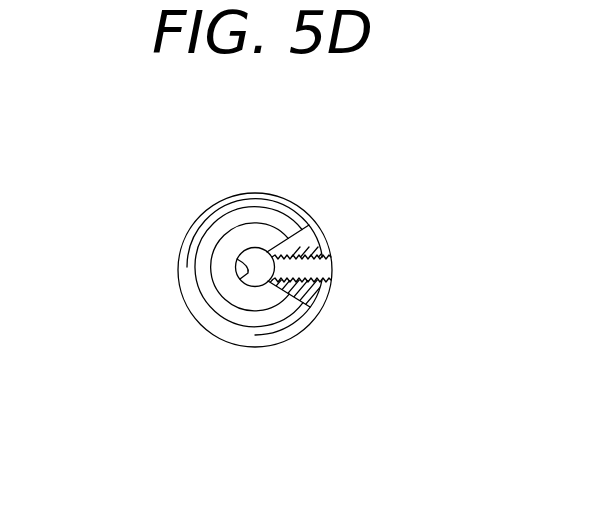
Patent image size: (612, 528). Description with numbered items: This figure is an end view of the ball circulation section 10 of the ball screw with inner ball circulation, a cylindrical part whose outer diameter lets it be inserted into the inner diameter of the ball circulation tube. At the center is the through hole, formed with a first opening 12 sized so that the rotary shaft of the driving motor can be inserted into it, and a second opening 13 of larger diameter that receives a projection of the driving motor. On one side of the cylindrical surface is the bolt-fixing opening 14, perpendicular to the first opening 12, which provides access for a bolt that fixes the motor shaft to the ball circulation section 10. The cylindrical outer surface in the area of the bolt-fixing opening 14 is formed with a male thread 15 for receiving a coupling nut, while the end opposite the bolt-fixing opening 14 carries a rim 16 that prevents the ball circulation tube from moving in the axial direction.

The ball circulation section 10 is at (190, 193).
The first opening 12 is at (240, 278).
The second opening 13 is at (259, 296).
The bolt-fixing opening 14 is at (331, 272).
The male thread 15 is at (263, 340).
The rim 16 is at (288, 333).